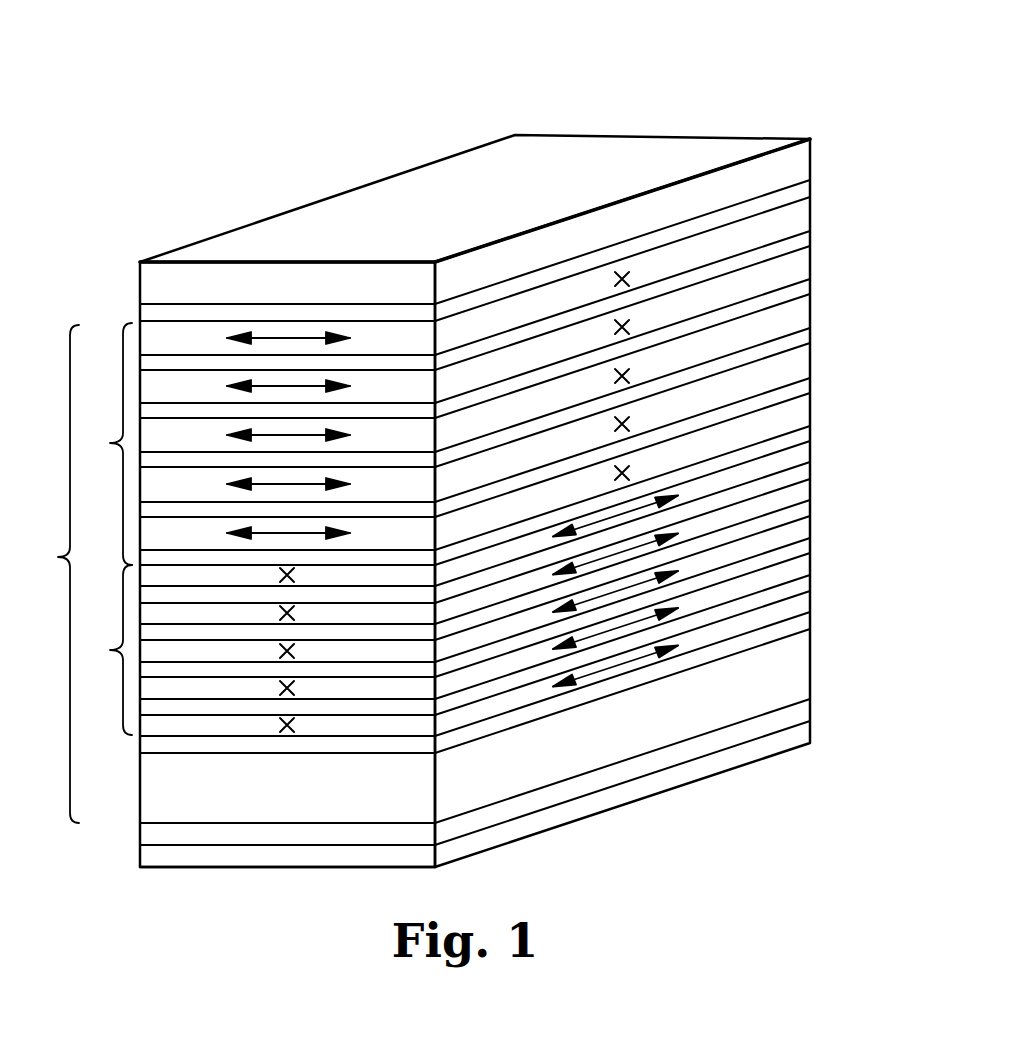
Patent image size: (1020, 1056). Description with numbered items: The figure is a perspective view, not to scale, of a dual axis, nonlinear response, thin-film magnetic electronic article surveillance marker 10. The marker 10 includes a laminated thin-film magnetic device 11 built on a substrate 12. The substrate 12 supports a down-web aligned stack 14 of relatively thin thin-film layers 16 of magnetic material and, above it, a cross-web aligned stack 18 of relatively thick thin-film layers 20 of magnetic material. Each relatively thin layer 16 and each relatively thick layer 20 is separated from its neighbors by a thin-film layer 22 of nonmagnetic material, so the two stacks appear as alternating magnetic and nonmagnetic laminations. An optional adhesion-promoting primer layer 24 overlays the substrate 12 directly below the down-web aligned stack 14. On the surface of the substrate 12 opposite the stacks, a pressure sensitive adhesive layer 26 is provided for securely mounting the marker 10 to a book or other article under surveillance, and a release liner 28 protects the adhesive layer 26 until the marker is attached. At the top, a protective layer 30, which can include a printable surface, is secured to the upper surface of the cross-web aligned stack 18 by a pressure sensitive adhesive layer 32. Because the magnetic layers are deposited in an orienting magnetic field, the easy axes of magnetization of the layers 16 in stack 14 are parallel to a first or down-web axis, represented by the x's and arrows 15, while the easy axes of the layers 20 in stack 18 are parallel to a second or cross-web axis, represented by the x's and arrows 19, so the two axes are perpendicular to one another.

The EAS marker 10 is at (582, 97).
The laminated thin-film magnetic device 11 is at (52, 574).
The substrate 12 is at (152, 797).
The down-web aligned stack 14 is at (102, 650).
The x's and arrows 15 is at (293, 724).
The relatively thin thin-film layers 16 is at (797, 502).
The cross-web aligned stack 18 is at (103, 444).
The x's and arrows 19 is at (282, 338).
The relatively thick thin-film layers 20 is at (797, 224).
The thin-film layer of nonmagnetic material 22 is at (797, 247).
The adhesion-promoting primer layer 24 is at (148, 743).
The pressure sensitive adhesive layer 26 is at (135, 832).
The release liner 28 is at (135, 858).
The protective layer 30 is at (138, 280).
The pressure sensitive adhesive layer 32 is at (138, 312).